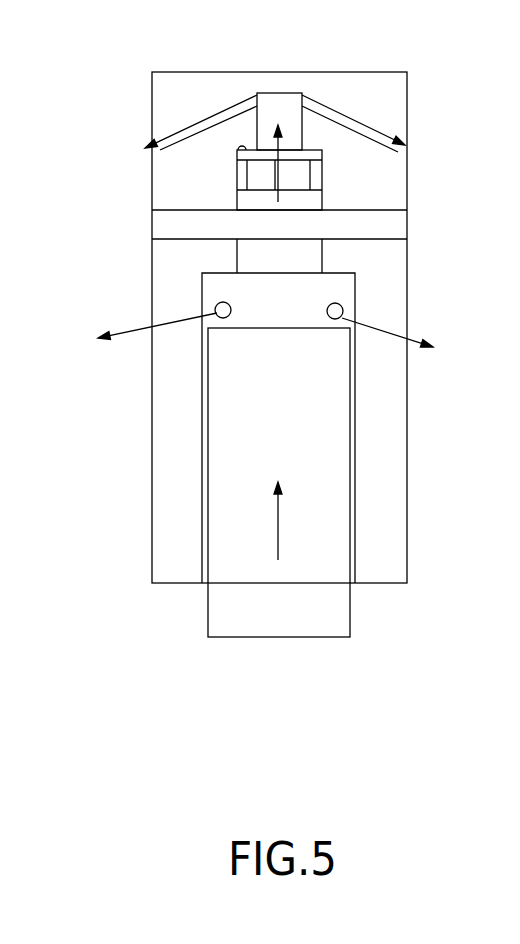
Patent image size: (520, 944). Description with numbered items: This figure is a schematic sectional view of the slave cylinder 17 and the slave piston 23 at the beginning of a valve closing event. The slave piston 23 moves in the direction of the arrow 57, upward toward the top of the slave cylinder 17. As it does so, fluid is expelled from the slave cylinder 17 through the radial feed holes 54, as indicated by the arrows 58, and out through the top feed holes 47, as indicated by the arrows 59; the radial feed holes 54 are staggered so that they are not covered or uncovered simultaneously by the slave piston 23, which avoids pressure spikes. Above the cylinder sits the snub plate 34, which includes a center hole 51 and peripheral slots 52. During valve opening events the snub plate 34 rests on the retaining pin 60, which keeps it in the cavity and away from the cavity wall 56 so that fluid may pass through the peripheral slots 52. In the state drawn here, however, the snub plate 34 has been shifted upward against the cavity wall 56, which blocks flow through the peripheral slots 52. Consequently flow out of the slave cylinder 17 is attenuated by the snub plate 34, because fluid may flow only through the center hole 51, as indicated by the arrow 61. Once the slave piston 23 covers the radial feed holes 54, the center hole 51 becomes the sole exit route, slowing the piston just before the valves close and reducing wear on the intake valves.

The slave cylinder 17 is at (350, 422).
The slave piston 23 is at (320, 508).
The snub plate 34 is at (340, 174).
The top feed holes 47 is at (210, 117).
The center hole 51 is at (298, 97).
The peripheral slots 52 is at (243, 175).
The radial feed holes 54 is at (218, 306).
The cavity wall 56 is at (237, 148).
The arrow 57 is at (273, 532).
The arrows 58 is at (143, 328).
The arrows 59 is at (165, 139).
The retaining pin 60 is at (167, 228).
The arrow 61 is at (284, 190).